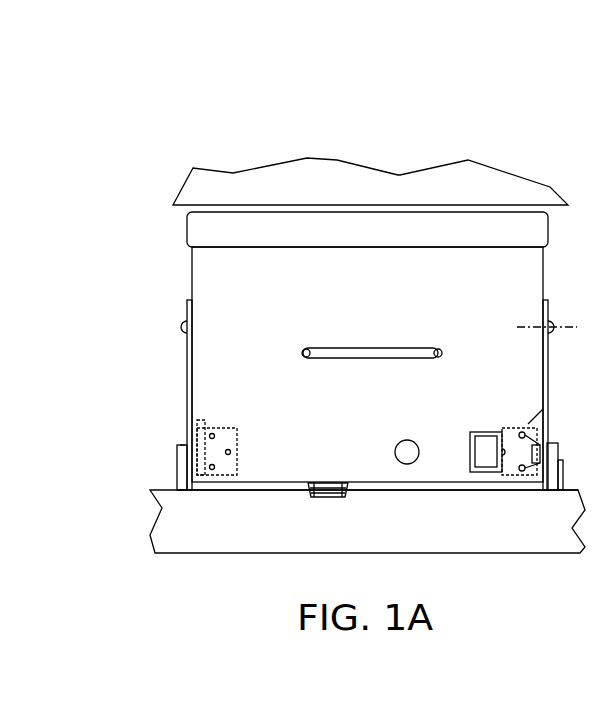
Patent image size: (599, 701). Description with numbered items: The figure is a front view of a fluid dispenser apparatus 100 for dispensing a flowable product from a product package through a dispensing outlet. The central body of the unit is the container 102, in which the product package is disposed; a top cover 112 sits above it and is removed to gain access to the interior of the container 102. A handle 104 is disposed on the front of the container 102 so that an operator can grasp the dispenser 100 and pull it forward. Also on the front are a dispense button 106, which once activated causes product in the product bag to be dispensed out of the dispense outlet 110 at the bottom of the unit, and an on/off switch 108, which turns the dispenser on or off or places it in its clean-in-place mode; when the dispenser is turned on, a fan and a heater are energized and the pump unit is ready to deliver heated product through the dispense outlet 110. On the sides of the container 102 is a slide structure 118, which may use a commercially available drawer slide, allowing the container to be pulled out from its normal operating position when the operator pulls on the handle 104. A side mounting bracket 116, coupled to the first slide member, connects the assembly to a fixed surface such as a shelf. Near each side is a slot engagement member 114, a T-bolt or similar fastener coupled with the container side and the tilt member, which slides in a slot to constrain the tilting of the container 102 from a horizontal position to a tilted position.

The fluid dispenser apparatus 100 is at (367, 148).
The container 102 is at (385, 305).
The handle 104 is at (400, 347).
The dispense button 106 is at (408, 450).
The on/off switch 108 is at (482, 438).
The dispense outlet 110 is at (328, 498).
The top cover 112 is at (383, 240).
The slot engagement member 114 is at (178, 323).
The side mounting bracket 116 is at (177, 480).
The slide structure 118 is at (182, 445).